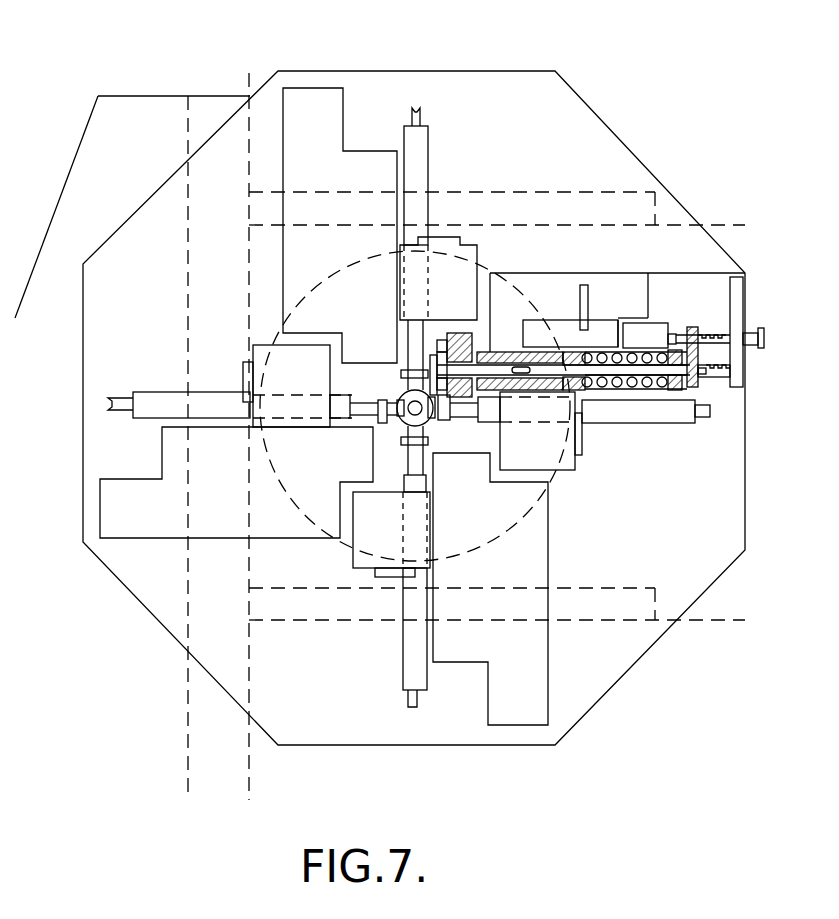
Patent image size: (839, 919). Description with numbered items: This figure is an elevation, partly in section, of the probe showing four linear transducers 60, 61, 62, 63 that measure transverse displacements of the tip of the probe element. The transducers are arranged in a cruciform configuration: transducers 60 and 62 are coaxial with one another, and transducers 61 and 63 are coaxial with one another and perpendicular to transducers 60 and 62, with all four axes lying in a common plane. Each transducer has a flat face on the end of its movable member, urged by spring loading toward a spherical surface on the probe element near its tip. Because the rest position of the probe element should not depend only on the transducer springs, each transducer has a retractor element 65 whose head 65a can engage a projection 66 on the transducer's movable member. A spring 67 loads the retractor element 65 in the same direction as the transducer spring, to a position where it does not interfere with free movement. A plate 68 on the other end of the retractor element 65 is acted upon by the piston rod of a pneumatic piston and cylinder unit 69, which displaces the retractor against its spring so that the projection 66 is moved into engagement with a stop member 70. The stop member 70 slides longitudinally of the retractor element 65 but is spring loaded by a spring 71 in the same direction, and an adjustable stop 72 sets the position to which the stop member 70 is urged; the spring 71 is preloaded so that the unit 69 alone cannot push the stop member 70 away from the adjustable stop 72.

The linear transducer 60 is at (148, 403).
The linear transducer 61 is at (418, 162).
The linear transducer 62 is at (620, 413).
The linear transducer 63 is at (412, 655).
The retractor element 65 is at (468, 368).
The head 65a is at (557, 348).
The projection 66 is at (445, 413).
The spring 67 is at (713, 378).
The plate 68 is at (697, 330).
The pneumatic piston and cylinder unit 69 is at (645, 338).
The stop member 70 is at (485, 352).
The spring 71 is at (648, 385).
The adjustable stop 72 is at (448, 335).